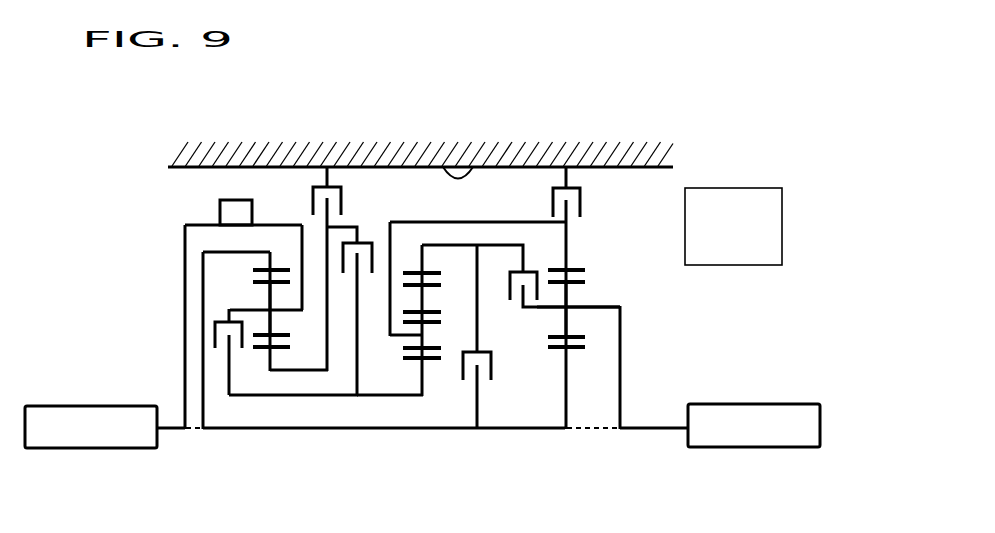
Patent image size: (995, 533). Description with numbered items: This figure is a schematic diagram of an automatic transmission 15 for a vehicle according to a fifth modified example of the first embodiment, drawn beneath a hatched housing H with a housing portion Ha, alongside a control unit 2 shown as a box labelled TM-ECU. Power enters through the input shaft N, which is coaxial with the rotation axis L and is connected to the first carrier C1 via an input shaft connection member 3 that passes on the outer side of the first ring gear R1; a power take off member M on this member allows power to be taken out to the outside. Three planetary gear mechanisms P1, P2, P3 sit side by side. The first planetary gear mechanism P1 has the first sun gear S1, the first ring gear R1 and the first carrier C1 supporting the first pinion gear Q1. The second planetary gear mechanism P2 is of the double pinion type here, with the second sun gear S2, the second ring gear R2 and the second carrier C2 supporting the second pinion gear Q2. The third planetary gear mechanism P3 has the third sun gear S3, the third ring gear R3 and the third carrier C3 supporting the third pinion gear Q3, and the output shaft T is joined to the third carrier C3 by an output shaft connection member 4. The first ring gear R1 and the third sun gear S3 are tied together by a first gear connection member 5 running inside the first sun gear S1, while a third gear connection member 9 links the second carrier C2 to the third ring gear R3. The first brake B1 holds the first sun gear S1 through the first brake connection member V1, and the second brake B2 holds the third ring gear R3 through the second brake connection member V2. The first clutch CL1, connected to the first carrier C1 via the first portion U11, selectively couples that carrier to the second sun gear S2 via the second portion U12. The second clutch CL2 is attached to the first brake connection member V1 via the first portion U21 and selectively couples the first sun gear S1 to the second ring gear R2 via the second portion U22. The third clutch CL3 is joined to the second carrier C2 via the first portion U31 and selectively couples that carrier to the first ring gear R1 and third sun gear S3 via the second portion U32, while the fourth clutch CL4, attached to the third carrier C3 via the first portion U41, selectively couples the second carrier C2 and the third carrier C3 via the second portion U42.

The automatic transmission 15 is at (420, 126).
The housing H is at (395, 157).
The housing portion Ha is at (470, 172).
The transmission electronic control unit (TM-ECU) 2 is at (716, 188).
The input shaft N is at (108, 449).
The rotation axis L is at (191, 438).
The output shaft T is at (740, 449).
The first gear connection member 5 is at (228, 432).
The input shaft connection member 3 is at (185, 262).
The power take off member M is at (231, 200).
The first carrier C1 is at (259, 308).
The first portion of first clutch connection member U11 is at (228, 310).
The first clutch CL1 is at (216, 353).
The second portion of first clutch connection member U12 is at (226, 396).
The first planetary gear mechanism P1 is at (290, 361).
The first ring gear R1 is at (277, 268).
The first pinion gear Q1 is at (272, 322).
The first sun gear S1 is at (290, 352).
The first brake connection member V1 is at (328, 272).
The first brake B1 is at (344, 199).
The first portion of second clutch connection member U21 is at (343, 227).
The second clutch CL2 is at (376, 262).
The second portion of second clutch connection member U22 is at (358, 320).
The third gear connection member 9 is at (508, 222).
The second carrier C2 is at (402, 333).
The first portion of fourth clutch connection member U41 is at (498, 245).
The second planetary gear mechanism P2 is at (412, 367).
The second ring gear R2 is at (430, 274).
The second pinion gear Q2 is at (425, 303).
The second sun gear S2 is at (421, 379).
The first portion of third clutch connection member U31 is at (478, 316).
The third clutch CL3 is at (525, 378).
The second portion of third clutch connection member U32 is at (478, 412).
The fourth clutch CL4 is at (539, 271).
The second portion of fourth clutch connection member U42 is at (535, 308).
The third carrier C3 is at (578, 307).
The output shaft connection member 4 is at (621, 407).
The second brake B2 is at (584, 203).
The second brake connection member V2 is at (571, 217).
The third planetary gear mechanism P3 is at (582, 368).
The third ring gear R3 is at (578, 271).
The third pinion gear Q3 is at (568, 327).
The third sun gear S3 is at (567, 355).